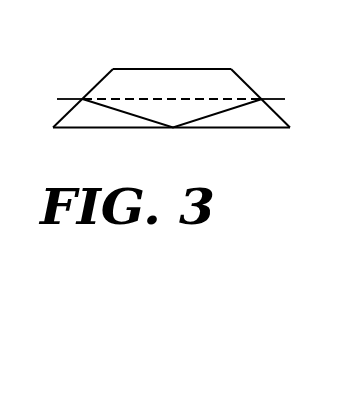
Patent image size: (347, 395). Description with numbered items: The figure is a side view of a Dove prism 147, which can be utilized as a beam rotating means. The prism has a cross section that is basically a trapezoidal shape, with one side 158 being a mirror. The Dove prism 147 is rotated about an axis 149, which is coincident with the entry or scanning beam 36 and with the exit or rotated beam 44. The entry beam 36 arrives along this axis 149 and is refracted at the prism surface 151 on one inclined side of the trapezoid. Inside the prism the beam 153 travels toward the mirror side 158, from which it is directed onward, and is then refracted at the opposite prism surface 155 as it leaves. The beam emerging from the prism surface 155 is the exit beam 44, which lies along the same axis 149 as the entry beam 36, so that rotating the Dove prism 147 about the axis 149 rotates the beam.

The entry beam 36 is at (62, 101).
The exit beam 44 is at (273, 99).
The Dove prism 147 is at (214, 129).
The axis 149 is at (128, 99).
The prism surface 151 is at (100, 78).
The exiting beam 153 is at (202, 117).
The prism surface 155 is at (249, 83).
The mirror side 158 is at (121, 129).